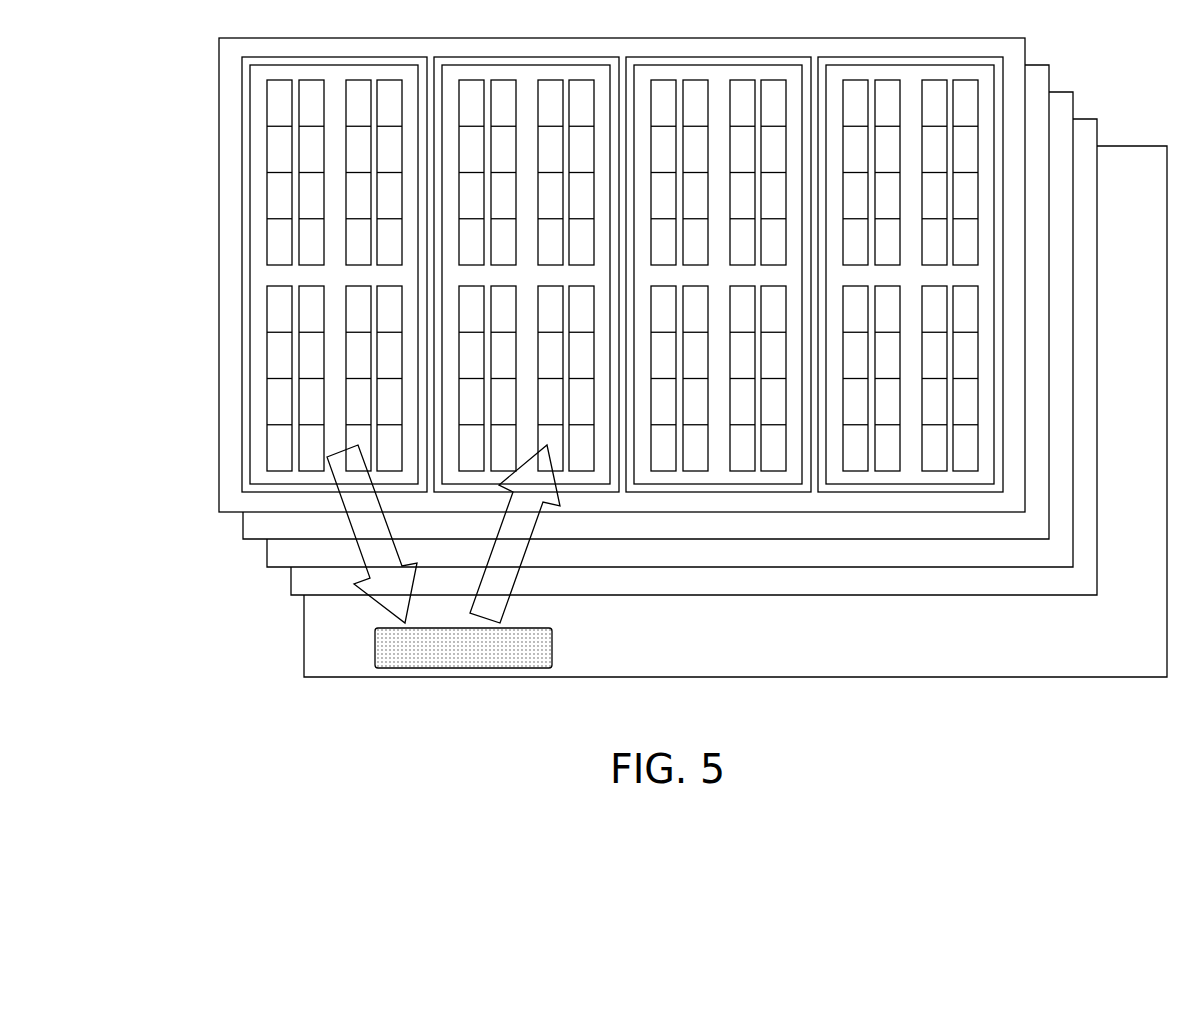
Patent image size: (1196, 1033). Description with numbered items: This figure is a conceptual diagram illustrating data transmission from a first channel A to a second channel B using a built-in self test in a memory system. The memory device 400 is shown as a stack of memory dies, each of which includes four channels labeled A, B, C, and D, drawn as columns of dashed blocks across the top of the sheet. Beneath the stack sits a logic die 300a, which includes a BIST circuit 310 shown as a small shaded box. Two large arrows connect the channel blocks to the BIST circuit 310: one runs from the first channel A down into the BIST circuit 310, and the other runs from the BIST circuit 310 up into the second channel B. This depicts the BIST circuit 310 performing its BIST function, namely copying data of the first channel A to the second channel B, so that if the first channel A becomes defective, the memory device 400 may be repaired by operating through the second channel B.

The logic die 300a is at (735, 411).
The memory device 400 is at (271, 610).
The BIST circuit 310 is at (552, 648).